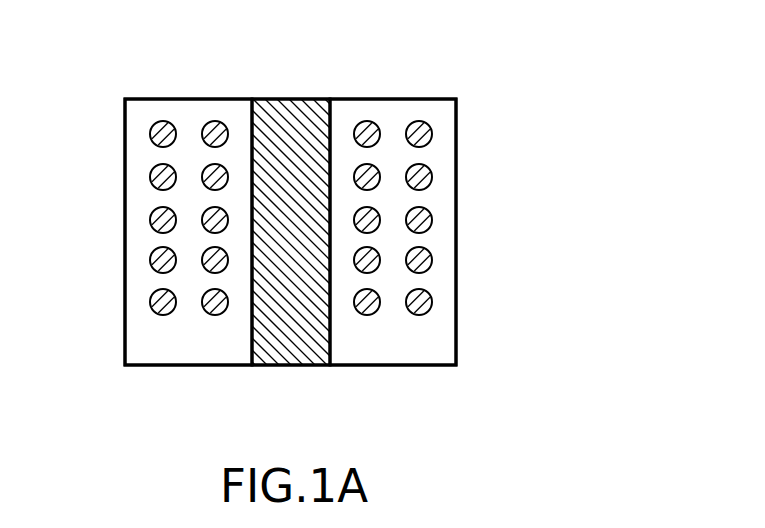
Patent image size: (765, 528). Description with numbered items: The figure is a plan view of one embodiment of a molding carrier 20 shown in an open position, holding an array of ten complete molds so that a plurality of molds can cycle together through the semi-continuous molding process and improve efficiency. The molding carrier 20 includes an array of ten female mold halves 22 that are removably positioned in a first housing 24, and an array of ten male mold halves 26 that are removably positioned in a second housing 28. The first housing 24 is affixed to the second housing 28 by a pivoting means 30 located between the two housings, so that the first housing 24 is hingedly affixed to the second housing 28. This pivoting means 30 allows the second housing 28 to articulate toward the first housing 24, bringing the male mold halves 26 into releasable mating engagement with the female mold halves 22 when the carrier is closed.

The molding carrier 20 is at (553, 114).
The female mold halves 22 is at (151, 296).
The first housing 24 is at (172, 365).
The male mold halves 26 is at (428, 226).
The second housing 28 is at (456, 215).
The pivoting means 30 is at (293, 365).